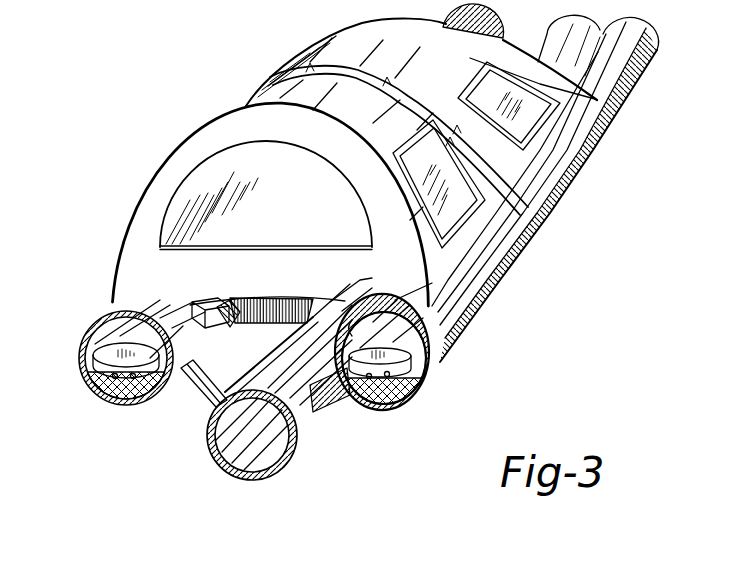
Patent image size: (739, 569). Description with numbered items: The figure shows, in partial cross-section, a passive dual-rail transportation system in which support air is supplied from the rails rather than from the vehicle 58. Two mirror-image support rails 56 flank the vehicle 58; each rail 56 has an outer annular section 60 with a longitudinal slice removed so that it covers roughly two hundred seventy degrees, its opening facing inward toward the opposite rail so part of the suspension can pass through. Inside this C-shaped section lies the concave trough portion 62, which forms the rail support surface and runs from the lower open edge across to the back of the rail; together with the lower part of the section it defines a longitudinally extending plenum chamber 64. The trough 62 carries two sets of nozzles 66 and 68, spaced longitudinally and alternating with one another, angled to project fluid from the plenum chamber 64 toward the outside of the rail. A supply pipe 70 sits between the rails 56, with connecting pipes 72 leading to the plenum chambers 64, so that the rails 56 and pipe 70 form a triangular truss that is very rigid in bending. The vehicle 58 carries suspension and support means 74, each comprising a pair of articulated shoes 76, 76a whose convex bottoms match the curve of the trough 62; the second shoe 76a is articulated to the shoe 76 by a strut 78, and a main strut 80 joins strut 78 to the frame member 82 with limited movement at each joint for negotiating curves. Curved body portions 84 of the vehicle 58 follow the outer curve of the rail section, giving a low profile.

The support rail 56 is at (553, 213).
The vehicle 58 is at (244, 87).
The outer annular section 60 is at (415, 402).
The trough portion 62 is at (143, 402).
The plenum chamber 64 is at (100, 394).
The set of nozzles 66 is at (112, 382).
The set of nozzles 68 is at (127, 384).
The supply pipe 70 is at (250, 484).
The connecting pipe 72 is at (200, 388).
The suspension and support means 74 is at (308, 322).
The support shoe 76 is at (98, 353).
The second support shoe 76a is at (197, 293).
The strut 78 is at (231, 325).
The main strut 80 is at (360, 280).
The frame member 82 is at (262, 298).
The curved body portion 84 is at (380, 297).